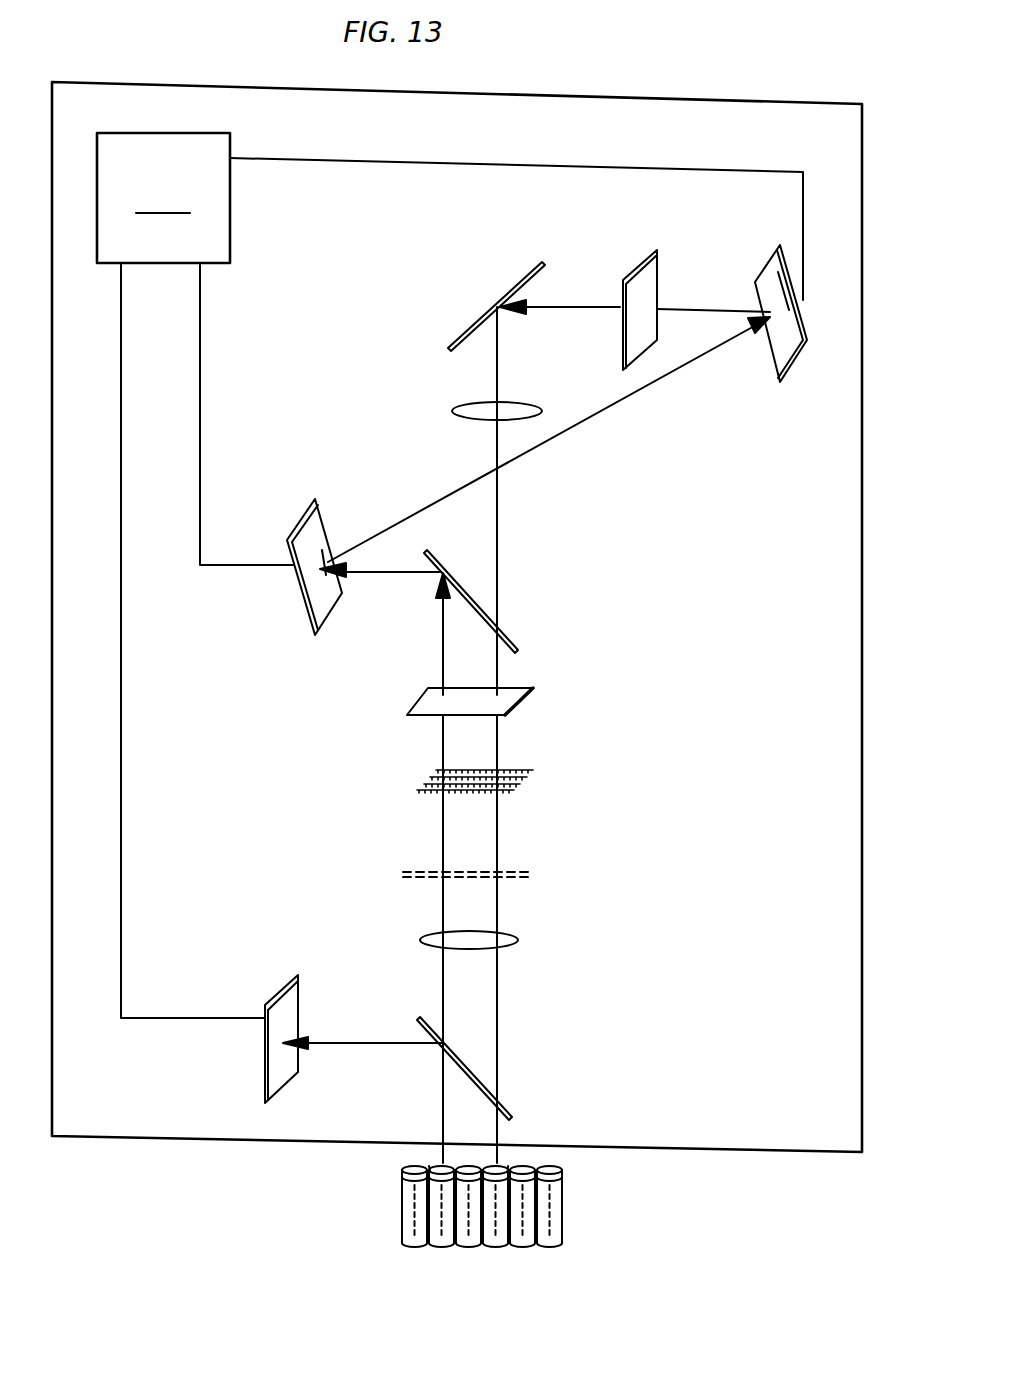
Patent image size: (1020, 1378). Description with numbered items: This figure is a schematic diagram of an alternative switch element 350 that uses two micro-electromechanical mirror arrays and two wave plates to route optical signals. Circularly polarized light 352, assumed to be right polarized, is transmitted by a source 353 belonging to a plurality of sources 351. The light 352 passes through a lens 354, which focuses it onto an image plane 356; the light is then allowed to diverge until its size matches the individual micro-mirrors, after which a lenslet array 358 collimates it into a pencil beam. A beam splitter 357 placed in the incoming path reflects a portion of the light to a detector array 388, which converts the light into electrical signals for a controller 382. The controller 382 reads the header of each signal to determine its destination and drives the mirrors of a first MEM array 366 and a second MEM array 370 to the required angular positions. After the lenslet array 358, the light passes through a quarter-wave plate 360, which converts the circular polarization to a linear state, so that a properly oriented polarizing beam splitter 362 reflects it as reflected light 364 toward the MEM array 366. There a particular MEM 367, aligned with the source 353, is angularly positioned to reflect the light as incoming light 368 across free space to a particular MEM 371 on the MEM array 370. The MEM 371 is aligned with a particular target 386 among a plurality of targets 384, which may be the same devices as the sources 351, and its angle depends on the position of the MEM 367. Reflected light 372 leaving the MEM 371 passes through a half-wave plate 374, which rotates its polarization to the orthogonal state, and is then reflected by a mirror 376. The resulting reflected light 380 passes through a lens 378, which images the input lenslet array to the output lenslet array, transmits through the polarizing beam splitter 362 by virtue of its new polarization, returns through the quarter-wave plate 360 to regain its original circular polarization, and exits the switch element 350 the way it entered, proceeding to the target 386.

The switch element 350 is at (624, 88).
The sources 351 is at (390, 1220).
The circularly polarized light 352 is at (442, 990).
The source 353 is at (437, 1163).
The lens 354 is at (423, 942).
The image plane 356 is at (403, 872).
The beam splitter 357 is at (497, 1100).
The lenslet array 358 is at (427, 777).
The λ/4 plate 360 is at (407, 703).
The polarizing beam splitter 362 is at (530, 630).
The reflected light 364 is at (387, 575).
The MEM array 366 is at (305, 613).
The MEM 367 is at (320, 557).
The incoming light 368 is at (568, 431).
The MEM array 370 is at (797, 363).
The MEM 371 is at (773, 327).
The reflected light 372 is at (703, 305).
The λ/2 plate 374 is at (625, 277).
The mirror 376 is at (512, 287).
The lens 378 is at (440, 410).
The reflected light 380 is at (498, 557).
The controller 382 is at (450, 575).
The targets 384 is at (575, 1234).
The target 386 is at (500, 1163).
The detector array 388 is at (280, 990).